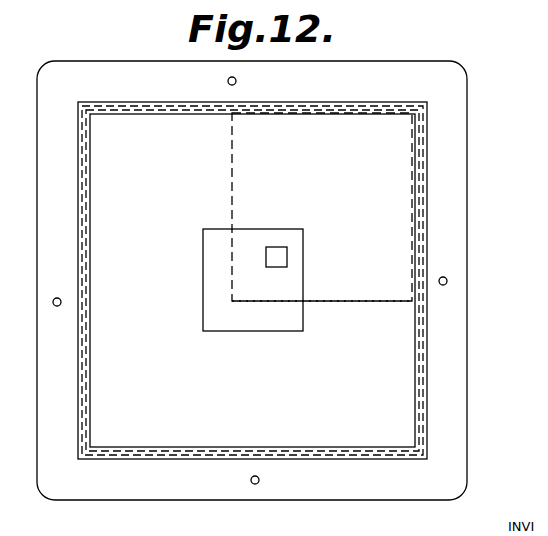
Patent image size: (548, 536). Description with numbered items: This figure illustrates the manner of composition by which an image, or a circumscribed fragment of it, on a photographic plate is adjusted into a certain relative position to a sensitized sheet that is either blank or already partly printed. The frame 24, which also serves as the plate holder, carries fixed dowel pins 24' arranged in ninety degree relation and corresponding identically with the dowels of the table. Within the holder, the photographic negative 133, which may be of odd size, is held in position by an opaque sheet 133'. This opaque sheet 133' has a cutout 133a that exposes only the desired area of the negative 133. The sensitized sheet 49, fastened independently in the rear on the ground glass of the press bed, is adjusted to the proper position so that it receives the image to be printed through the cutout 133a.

The frame 24 is at (252, 294).
The fixed dowel pins 24' is at (280, 264).
The photographic negative 133 is at (253, 299).
The cutout 133a is at (279, 256).
The opaque sheet 133' is at (322, 270).
The sensitized sheet 49 is at (347, 302).